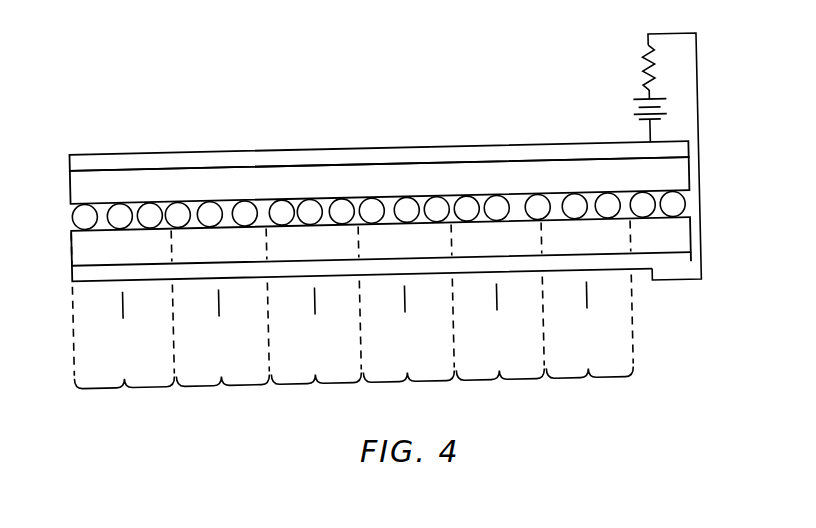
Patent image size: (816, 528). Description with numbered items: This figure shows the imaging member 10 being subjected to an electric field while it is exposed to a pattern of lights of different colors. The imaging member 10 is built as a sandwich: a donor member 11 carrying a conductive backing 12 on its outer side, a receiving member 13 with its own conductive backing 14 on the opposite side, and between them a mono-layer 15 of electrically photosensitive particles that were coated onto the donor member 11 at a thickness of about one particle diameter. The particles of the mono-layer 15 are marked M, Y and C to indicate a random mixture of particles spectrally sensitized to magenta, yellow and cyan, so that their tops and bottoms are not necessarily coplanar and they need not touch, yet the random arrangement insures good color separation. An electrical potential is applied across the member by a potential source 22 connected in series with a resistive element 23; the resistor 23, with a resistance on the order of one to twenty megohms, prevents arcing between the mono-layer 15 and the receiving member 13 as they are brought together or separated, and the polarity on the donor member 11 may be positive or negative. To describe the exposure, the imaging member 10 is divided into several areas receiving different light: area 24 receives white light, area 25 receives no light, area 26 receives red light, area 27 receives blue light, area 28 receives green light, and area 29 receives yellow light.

The imaging member 10 is at (150, 135).
The donor member 11 is at (71, 250).
The conductive backing 12 is at (71, 270).
The receiving member 13 is at (71, 183).
The conductive backing 14 is at (71, 153).
The mono-layer 15 is at (72, 212).
The potential source 22 is at (638, 107).
The resistive element 23 is at (646, 66).
The area 24 is at (123, 326).
The area 25 is at (221, 324).
The area 26 is at (315, 321).
The area 27 is at (407, 319).
The area 28 is at (499, 317).
The area 29 is at (588, 316).